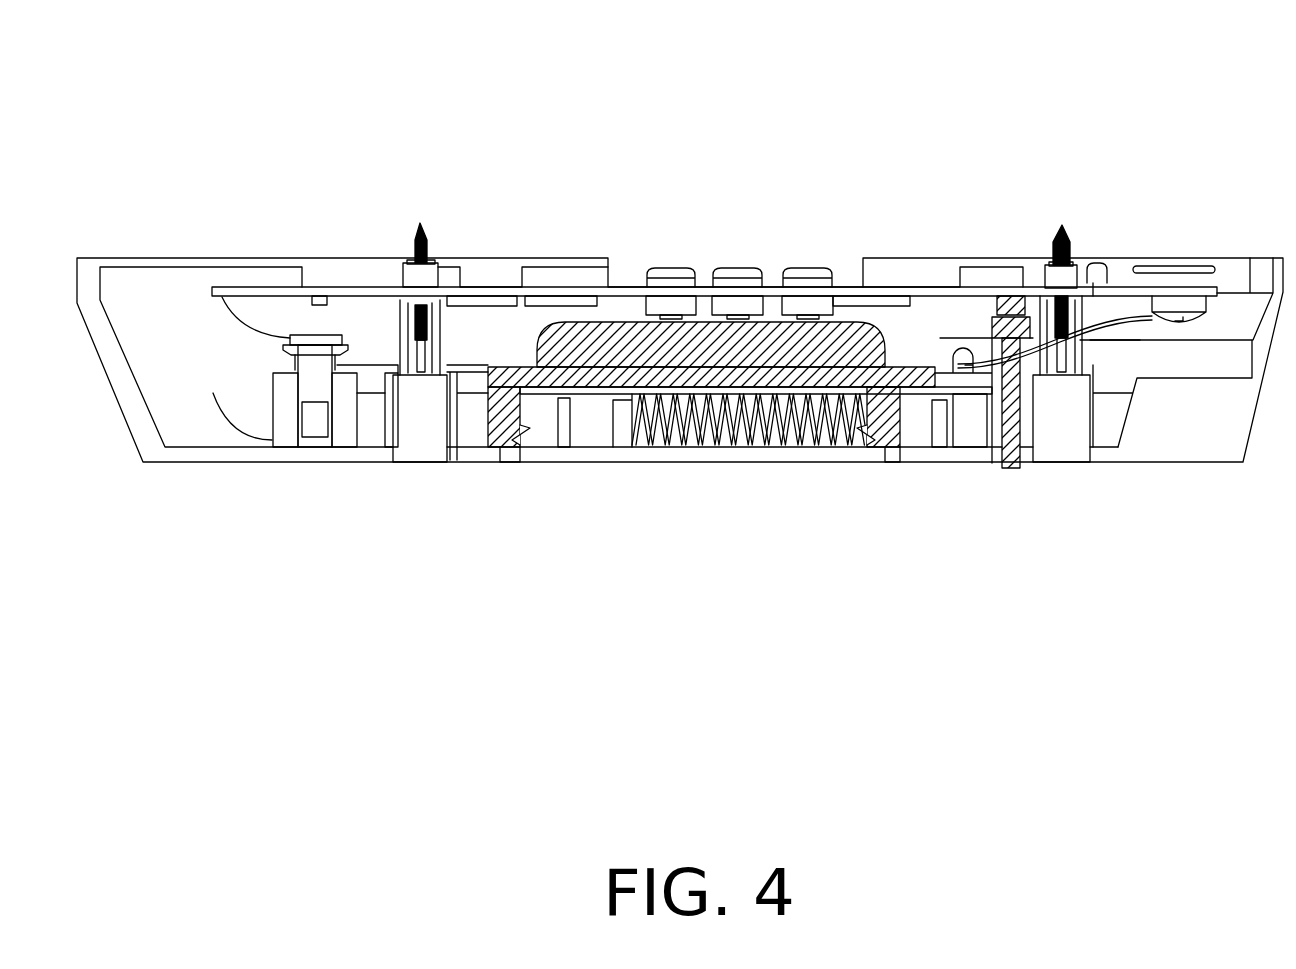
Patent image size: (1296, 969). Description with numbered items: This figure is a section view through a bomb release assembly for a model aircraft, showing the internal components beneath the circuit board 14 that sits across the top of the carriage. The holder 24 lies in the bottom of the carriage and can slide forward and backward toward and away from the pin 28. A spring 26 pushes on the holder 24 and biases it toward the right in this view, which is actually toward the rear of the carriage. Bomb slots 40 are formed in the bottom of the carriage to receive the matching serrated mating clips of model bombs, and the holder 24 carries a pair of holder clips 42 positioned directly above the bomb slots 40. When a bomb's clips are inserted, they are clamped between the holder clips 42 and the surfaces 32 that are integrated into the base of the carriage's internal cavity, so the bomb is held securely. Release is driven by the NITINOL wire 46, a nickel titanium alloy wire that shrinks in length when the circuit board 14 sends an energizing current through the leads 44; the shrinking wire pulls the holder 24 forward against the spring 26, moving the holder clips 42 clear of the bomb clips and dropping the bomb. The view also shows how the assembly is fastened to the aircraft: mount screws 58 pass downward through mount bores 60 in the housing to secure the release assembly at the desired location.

The circuit board 14 is at (788, 280).
The holder 24 is at (603, 380).
The spring 26 is at (810, 445).
The pin 28 is at (318, 340).
The surfaces 32 is at (558, 448).
The bomb slots 40 is at (522, 438).
The holder clips 42 is at (893, 437).
The leads 44 is at (1098, 335).
The NITINOL wire 46 is at (355, 367).
The mount screws 58 is at (428, 245).
The mount bores 60 is at (423, 428).